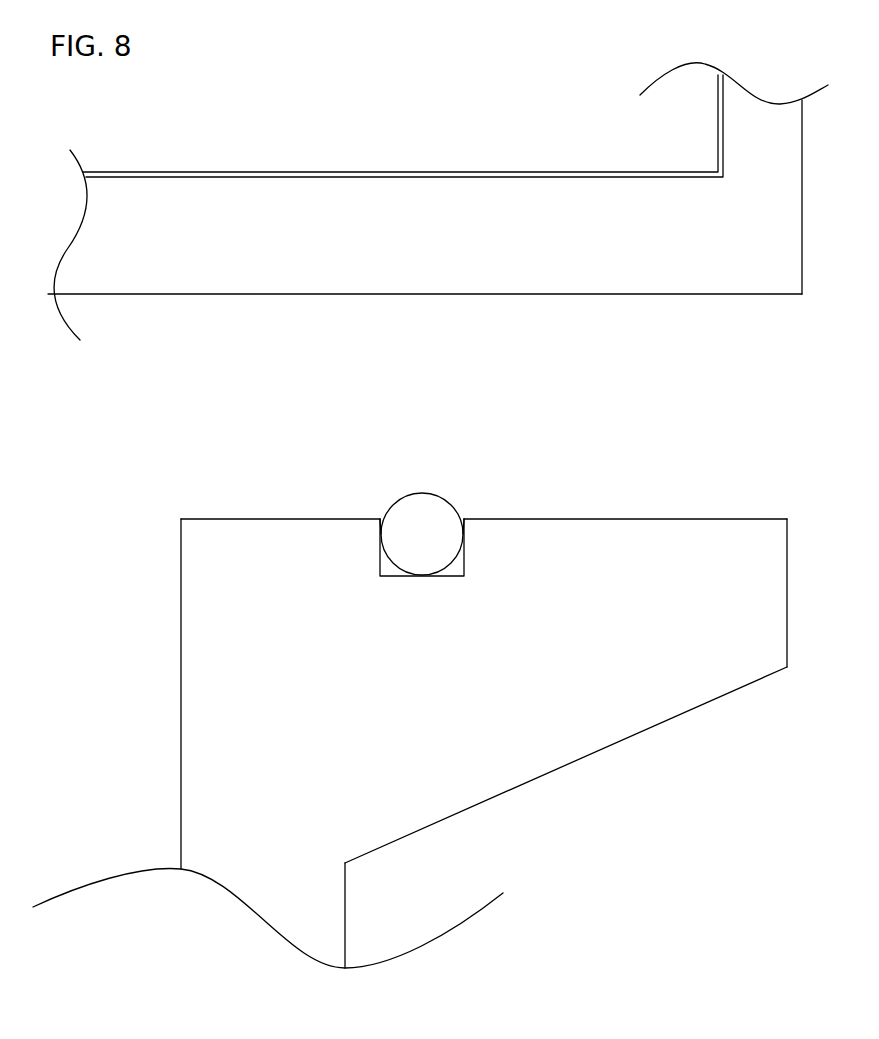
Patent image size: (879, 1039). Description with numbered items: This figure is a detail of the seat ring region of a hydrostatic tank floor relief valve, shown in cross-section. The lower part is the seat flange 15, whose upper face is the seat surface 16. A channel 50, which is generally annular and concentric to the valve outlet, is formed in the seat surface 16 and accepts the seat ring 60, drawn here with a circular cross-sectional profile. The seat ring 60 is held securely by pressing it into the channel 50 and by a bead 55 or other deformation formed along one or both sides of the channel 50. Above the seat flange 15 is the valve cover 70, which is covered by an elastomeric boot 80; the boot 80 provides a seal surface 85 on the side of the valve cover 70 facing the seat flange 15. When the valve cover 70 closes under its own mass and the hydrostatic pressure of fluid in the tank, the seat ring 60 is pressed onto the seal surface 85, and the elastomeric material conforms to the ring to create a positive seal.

The valve cover 70 is at (359, 124).
The elastomeric boot 80 is at (594, 246).
The seal surface 85 is at (368, 294).
The seat surface 16 is at (628, 517).
The seat flange 15 is at (670, 718).
The channel 50 is at (465, 567).
The seat ring 60 is at (437, 495).
The bead 55 is at (383, 522).